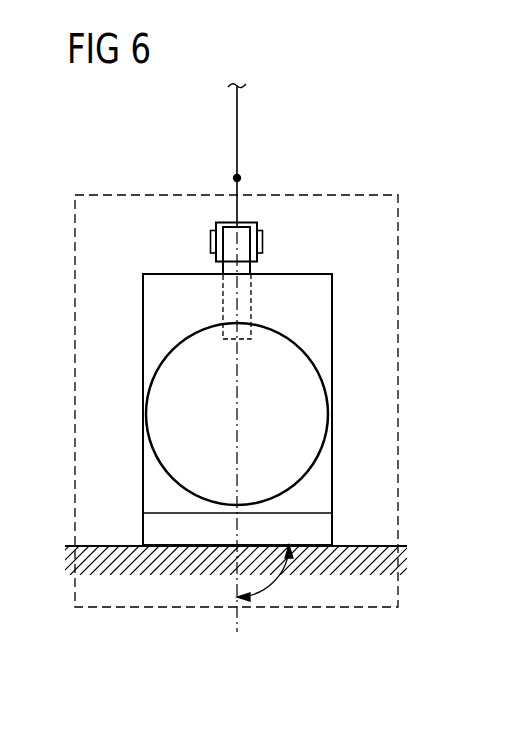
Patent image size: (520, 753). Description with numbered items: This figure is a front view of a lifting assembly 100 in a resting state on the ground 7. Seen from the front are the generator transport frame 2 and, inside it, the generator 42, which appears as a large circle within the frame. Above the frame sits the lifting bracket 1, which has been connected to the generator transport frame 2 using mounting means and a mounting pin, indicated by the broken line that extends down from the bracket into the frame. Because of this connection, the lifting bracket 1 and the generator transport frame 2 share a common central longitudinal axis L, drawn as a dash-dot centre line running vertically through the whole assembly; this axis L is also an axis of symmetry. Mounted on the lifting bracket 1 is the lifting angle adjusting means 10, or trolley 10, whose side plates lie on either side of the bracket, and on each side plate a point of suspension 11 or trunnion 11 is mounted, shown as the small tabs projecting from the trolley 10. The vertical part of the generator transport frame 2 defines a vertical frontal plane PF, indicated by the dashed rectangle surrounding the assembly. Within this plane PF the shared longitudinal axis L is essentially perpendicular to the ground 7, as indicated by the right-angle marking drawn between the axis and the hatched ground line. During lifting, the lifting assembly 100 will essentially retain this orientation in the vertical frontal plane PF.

The lifting assembly 100 is at (190, 258).
The lifting bracket 1 is at (228, 226).
The lifting angle adjusting means 10 is at (252, 224).
The point of suspension 11 is at (263, 242).
The generator transport frame 2 is at (317, 281).
The generator 42 is at (308, 407).
The ground 7 is at (117, 545).
The common central longitudinal axis L is at (237, 293).
The vertical frontal plane PF is at (370, 607).